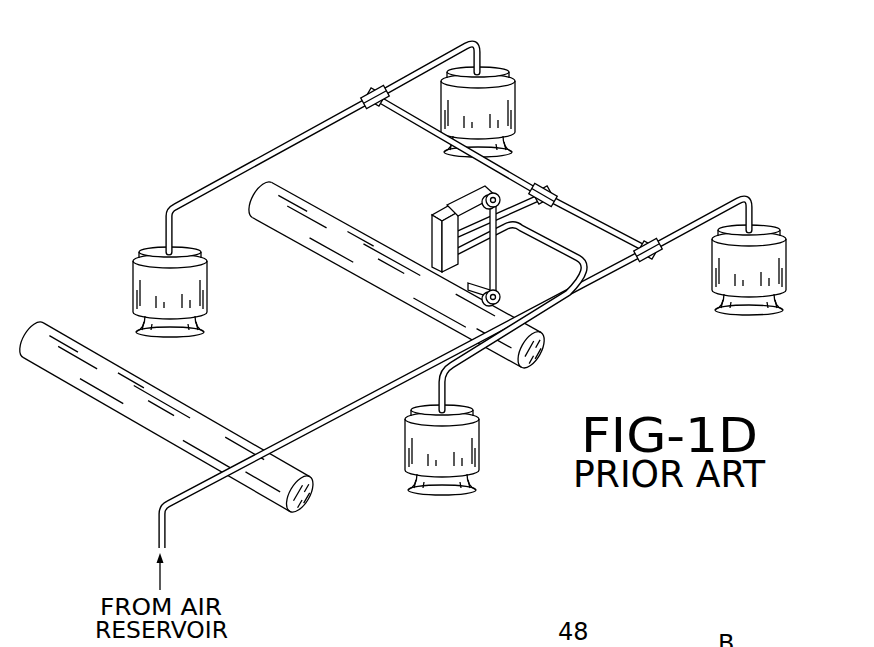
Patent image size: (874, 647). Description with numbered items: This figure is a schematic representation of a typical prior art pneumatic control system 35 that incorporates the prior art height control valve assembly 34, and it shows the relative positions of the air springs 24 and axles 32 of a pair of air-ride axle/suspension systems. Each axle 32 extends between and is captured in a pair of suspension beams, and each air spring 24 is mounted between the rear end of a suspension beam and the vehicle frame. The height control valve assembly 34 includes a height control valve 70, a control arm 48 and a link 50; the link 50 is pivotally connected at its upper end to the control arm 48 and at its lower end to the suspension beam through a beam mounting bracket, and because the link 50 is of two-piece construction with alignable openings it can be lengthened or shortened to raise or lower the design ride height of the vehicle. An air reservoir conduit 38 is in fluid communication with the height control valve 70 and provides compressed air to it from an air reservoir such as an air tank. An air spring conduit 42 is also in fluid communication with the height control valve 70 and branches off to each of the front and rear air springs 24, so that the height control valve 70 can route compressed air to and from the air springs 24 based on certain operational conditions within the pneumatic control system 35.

The air spring 24 is at (133, 283).
The axle 32 is at (368, 283).
The height control valve assembly 34 is at (424, 205).
The pneumatic control system 35 is at (233, 100).
The air reservoir conduit 38 is at (358, 395).
The air spring conduit 42 is at (205, 188).
The control arm 48 is at (485, 192).
The link 50 is at (492, 255).
The height control valve 70 is at (433, 232).